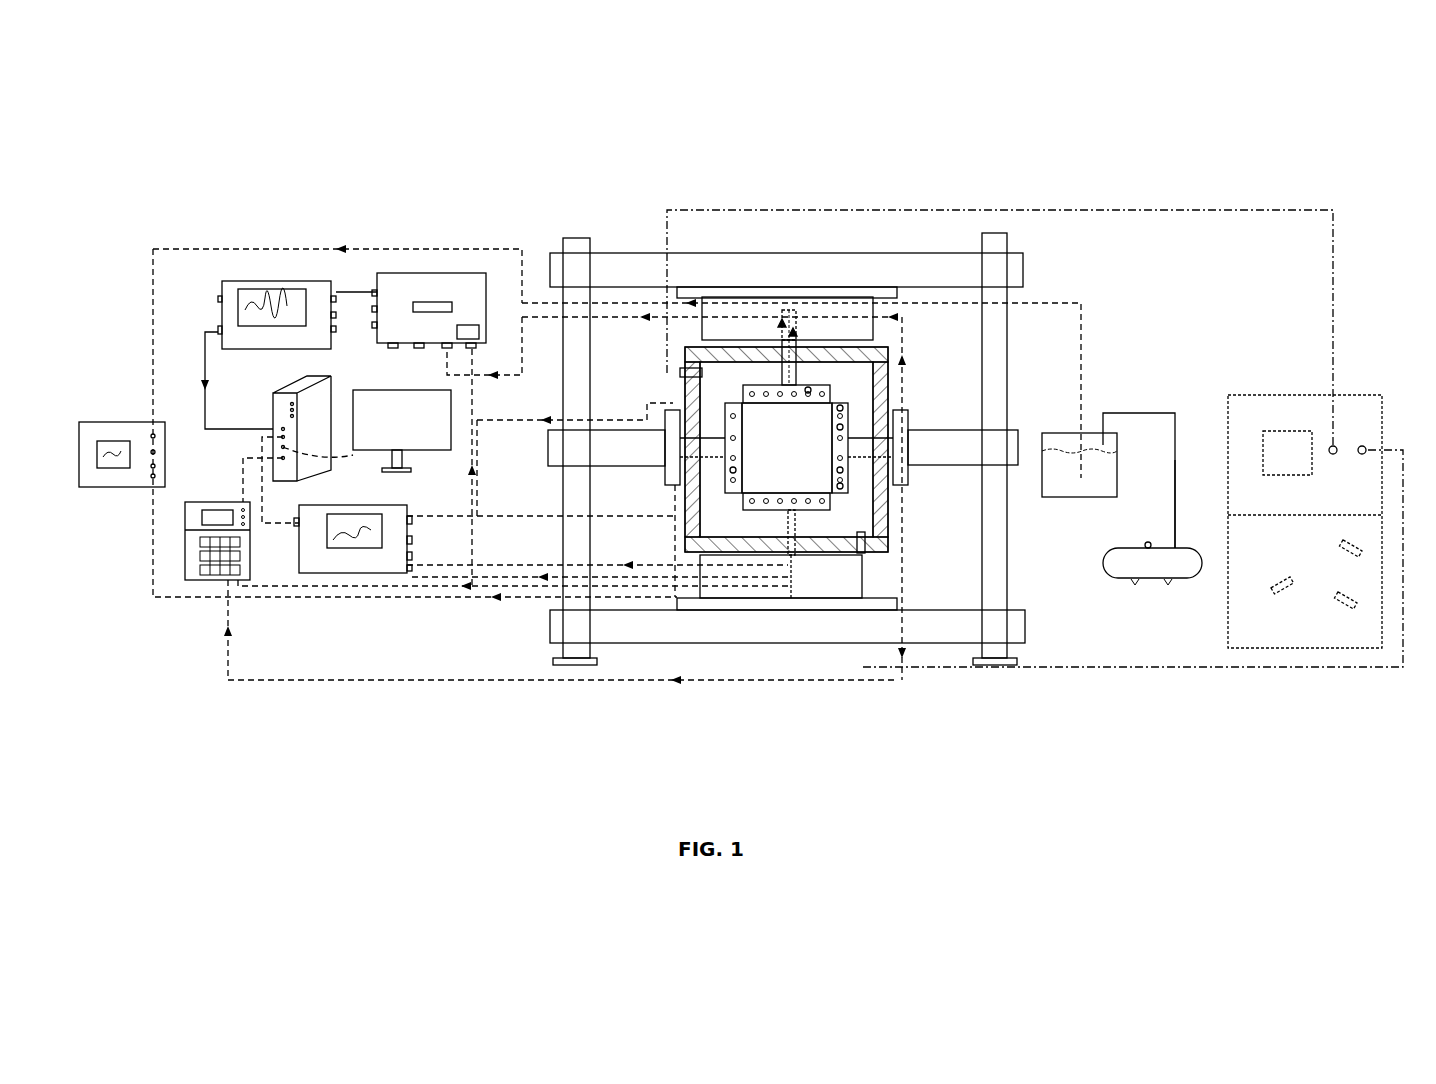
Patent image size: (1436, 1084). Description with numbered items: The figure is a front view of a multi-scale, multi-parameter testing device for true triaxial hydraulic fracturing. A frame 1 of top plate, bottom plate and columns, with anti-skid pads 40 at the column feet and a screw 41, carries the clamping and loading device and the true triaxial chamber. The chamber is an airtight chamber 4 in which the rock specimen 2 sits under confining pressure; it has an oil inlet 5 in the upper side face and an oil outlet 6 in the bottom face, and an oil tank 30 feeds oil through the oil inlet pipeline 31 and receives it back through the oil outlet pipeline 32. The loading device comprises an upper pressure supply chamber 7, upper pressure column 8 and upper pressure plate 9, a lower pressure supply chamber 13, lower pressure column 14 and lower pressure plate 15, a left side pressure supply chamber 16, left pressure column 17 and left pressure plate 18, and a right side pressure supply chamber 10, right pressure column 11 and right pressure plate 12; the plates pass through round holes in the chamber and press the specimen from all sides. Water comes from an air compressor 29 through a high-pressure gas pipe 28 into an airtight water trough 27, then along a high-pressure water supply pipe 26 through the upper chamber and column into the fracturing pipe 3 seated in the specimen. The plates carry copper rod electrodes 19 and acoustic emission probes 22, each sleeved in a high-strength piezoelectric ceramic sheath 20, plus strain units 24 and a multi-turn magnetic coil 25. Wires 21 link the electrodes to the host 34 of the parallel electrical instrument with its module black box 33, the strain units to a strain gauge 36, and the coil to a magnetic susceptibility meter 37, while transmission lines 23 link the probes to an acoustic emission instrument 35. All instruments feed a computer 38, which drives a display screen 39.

The frame 1 is at (712, 347).
The rock specimen 2 is at (800, 430).
The fracturing pipe 3 is at (835, 395).
The airtight chamber 4 is at (775, 297).
The oil inlet 5 is at (680, 372).
The oil outlet 6 is at (868, 552).
The upper pressure supply chamber 7 is at (778, 382).
The upper pressure column 8 is at (800, 350).
The upper pressure plate 9 is at (855, 395).
The right side pressure supply chamber 10 is at (834, 480).
The right pressure column 11 is at (836, 489).
The right pressure plate 12 is at (838, 499).
The lower pressure supply chamber 13 is at (845, 560).
The lower pressure column 14 is at (788, 598).
The lower pressure plate 15 is at (745, 555).
The left side pressure supply chamber 16 is at (672, 477).
The left pressure column 17 is at (722, 480).
The left pressure plate 18 is at (738, 500).
The copper rod electrode 19 is at (836, 400).
The high-strength piezoelectric ceramic sheath 20 is at (808, 385).
The wire 21 is at (725, 350).
The acoustic emission probe 22 is at (858, 425).
The transmission line 23 is at (850, 405).
The strain unit 24 is at (866, 548).
The multi-turn magnetic coil 25 is at (780, 387).
The high-pressure water supply pipe 26 is at (1117, 435).
The airtight water trough 27 is at (1177, 413).
The high-pressure gas pipe 28 is at (1178, 487).
The air compressor 29 is at (1182, 578).
The oil tank 30 is at (1355, 397).
The oil inlet pipeline 31 is at (1265, 210).
The oil outlet pipeline 32 is at (1275, 668).
The module black box of parallel electrical instrument 33 is at (412, 273).
The host of parallel electrical instrument 34 is at (292, 280).
The acoustic emission instrument 35 is at (325, 558).
The strain gauge 36 is at (190, 580).
The magnetic susceptibility meter 37 is at (142, 475).
The computer 38 is at (270, 397).
The display screen 39 is at (410, 455).
The anti-skid pad 40 is at (992, 665).
The screw 41 is at (876, 552).